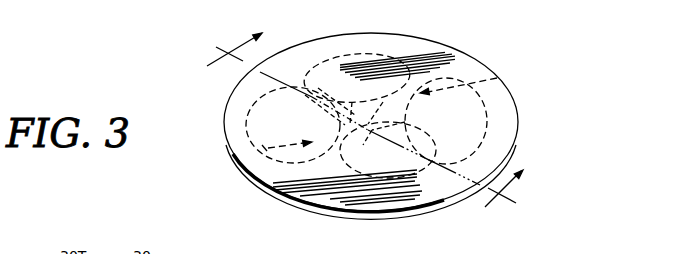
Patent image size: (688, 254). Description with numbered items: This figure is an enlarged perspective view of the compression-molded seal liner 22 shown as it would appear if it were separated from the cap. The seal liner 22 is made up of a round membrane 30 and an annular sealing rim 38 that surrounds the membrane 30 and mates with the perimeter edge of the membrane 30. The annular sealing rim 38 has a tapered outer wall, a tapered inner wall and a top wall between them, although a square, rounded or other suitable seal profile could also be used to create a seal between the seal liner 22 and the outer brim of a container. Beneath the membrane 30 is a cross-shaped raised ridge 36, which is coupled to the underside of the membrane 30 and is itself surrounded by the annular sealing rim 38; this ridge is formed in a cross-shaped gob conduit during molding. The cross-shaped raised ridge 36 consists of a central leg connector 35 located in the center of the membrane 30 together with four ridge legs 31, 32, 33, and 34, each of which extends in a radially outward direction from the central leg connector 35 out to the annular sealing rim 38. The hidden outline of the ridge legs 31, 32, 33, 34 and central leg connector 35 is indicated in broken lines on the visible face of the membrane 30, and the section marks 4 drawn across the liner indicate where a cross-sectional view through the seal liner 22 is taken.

The seal liner 22 is at (557, 100).
The section line 4- 4 is at (348, 132).
The membrane 30 is at (455, 117).
The ridge leg 31 is at (437, 137).
The ridge leg 32 is at (239, 162).
The ridge leg 33 is at (341, 90).
The ridge leg 34 is at (497, 78).
The central leg connector 35 is at (318, 110).
The cross-shaped raised ridge 36 is at (313, 98).
The annular sealing rim 38 is at (359, 222).